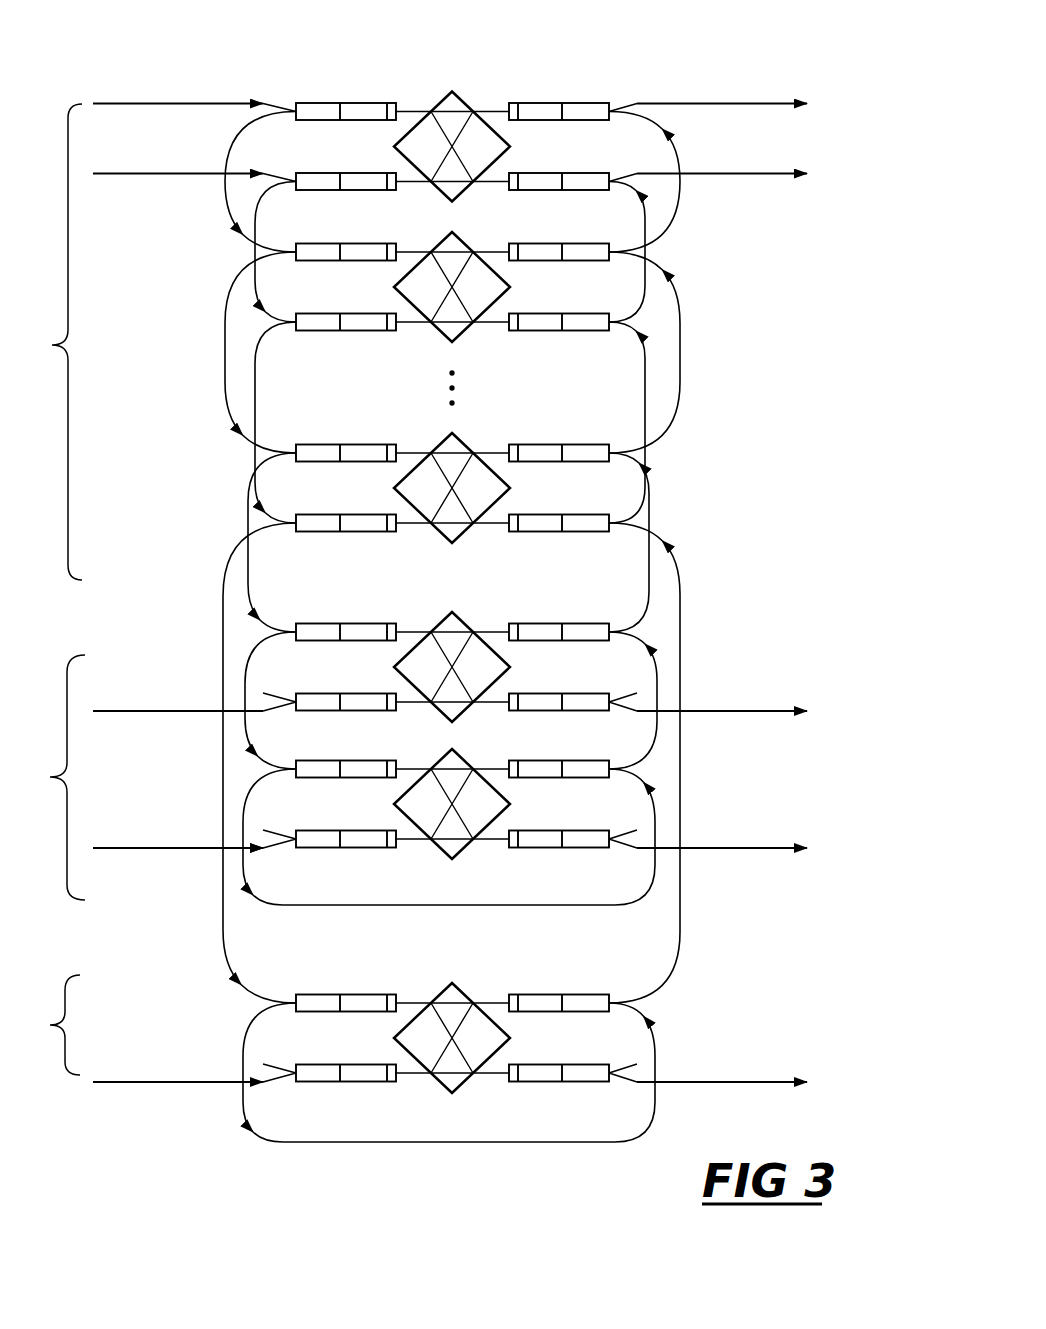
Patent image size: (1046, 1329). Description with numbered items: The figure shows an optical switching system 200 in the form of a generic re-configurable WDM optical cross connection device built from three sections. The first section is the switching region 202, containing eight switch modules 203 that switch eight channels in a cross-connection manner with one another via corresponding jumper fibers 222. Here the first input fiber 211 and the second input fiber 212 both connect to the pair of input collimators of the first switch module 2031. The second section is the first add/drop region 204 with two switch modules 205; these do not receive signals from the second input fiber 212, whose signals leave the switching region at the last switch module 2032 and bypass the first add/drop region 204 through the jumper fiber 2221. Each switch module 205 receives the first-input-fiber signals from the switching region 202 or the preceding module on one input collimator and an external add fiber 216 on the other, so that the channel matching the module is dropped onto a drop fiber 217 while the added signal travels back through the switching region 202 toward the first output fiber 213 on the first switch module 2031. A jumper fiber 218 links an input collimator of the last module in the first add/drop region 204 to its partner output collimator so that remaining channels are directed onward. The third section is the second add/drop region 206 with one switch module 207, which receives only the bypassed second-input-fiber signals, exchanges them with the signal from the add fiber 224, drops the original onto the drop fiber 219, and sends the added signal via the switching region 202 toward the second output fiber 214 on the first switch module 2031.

The optical switching system 200 is at (585, 35).
The switching region 202 is at (123, 366).
The switch module 203 is at (388, 100).
The first switch module 2031 is at (484, 102).
The last switch module 2032 is at (435, 445).
The first add/drop region 204 is at (123, 796).
The switch module 205 is at (440, 620).
The second add/drop region 206 is at (138, 1021).
The switch module 207 is at (516, 990).
The first input fiber 211 is at (141, 106).
The second input fiber 212 is at (167, 172).
The first output fiber 213 is at (716, 110).
The second output fiber 214 is at (718, 172).
The add fiber 216 is at (198, 711).
The drop fiber 217 is at (768, 711).
The jumper fiber 218 is at (441, 905).
The drop fiber 219 is at (760, 1086).
The jumper fiber 222 is at (232, 262).
The jumper fiber 2221 is at (222, 623).
The add fiber 224 is at (175, 1083).